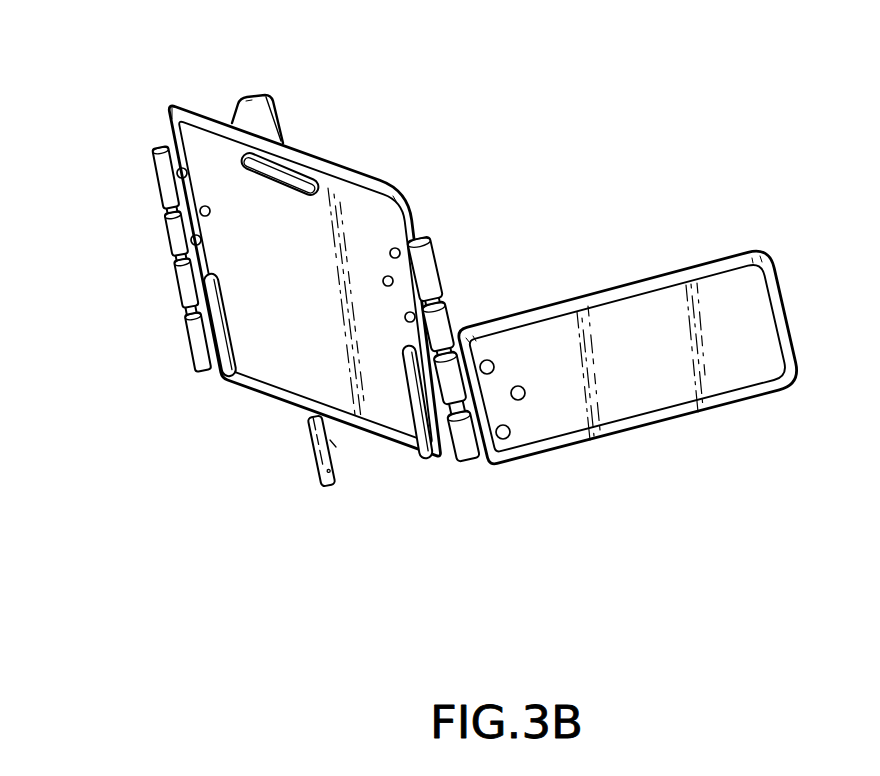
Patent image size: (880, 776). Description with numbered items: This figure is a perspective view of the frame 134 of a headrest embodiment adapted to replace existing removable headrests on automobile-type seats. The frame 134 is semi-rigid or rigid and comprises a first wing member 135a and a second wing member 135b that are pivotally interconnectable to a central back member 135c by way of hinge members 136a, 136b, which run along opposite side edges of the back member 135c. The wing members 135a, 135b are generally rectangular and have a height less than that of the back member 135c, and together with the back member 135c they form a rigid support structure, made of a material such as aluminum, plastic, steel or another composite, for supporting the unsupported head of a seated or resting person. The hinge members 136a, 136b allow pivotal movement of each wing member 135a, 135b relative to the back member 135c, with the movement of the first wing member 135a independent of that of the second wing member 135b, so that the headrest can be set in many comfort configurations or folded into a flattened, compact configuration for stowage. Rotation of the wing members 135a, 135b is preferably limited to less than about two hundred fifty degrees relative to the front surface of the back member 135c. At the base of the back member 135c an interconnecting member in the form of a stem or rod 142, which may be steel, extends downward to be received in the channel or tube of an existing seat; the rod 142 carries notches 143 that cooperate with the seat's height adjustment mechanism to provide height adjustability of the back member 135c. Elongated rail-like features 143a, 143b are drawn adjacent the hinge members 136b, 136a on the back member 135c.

The frame 134 is at (429, 289).
The first wing member 135a is at (283, 114).
The second wing member 135b is at (622, 333).
The back member 135c is at (315, 240).
The hinge member 136a is at (470, 441).
The hinge member 136b is at (177, 282).
The stem or rod 142 is at (312, 434).
The notch 143 is at (332, 446).
The left rail 143a is at (228, 358).
The right rail 143b is at (426, 452).